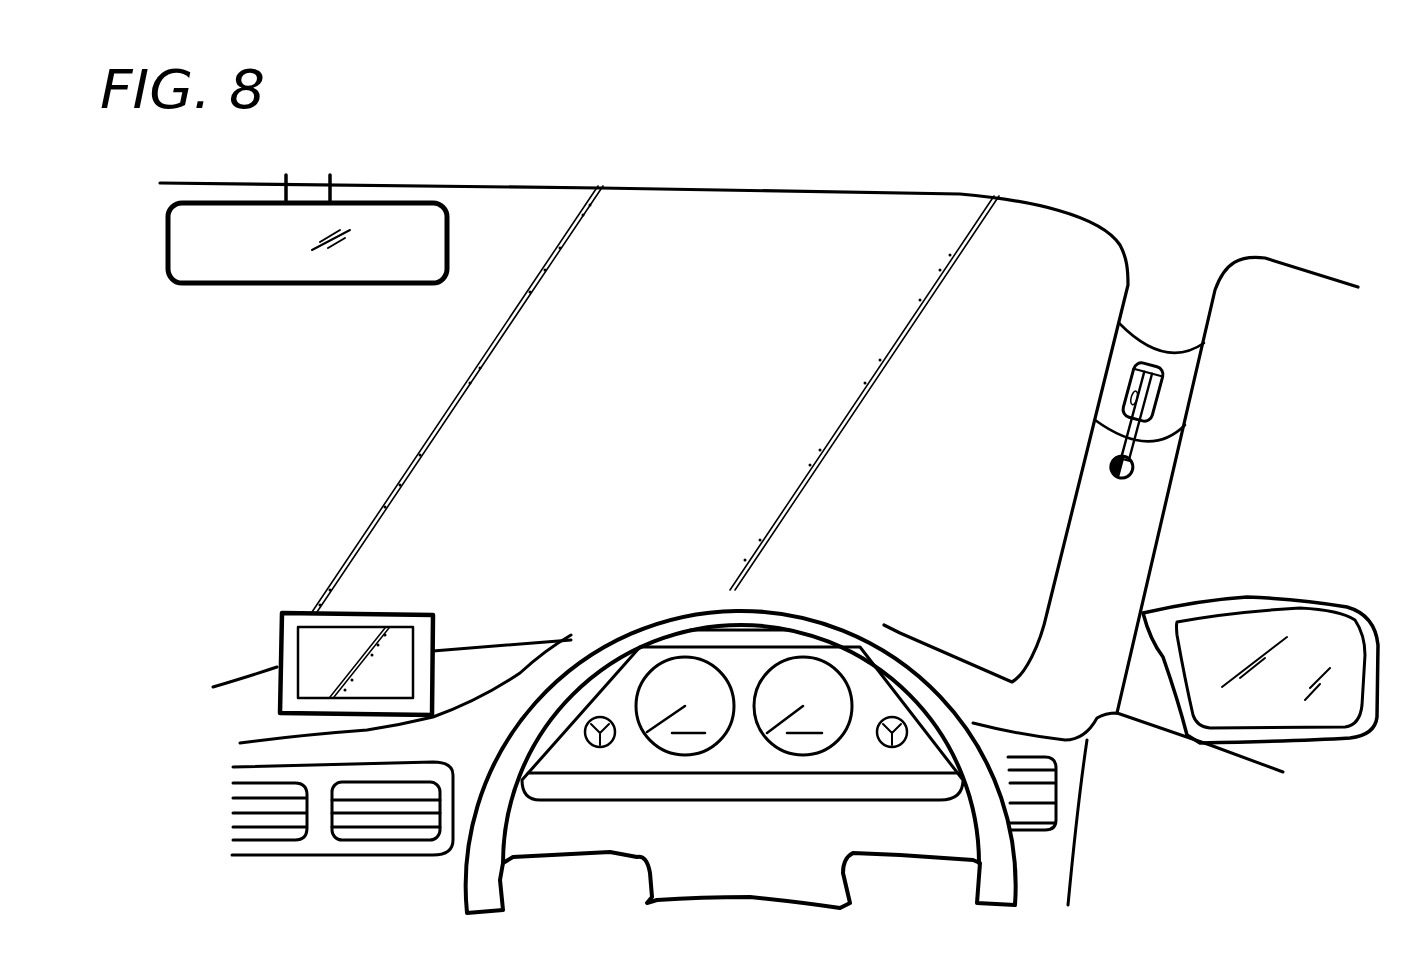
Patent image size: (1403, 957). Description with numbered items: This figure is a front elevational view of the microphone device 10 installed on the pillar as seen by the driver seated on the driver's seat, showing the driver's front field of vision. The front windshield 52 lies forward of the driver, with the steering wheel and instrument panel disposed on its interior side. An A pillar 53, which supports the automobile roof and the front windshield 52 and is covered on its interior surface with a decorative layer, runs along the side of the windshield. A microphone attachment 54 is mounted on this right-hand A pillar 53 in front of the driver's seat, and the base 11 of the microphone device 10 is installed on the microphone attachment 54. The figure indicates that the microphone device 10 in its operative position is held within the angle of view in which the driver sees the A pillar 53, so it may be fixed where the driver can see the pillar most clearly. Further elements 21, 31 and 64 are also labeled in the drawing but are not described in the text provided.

The microphone device 10 is at (1134, 406).
The base 11 is at (1128, 381).
The support arm 21 is at (1120, 438).
The ball joint knob 31 is at (1110, 472).
The front windshield 52 is at (800, 200).
The pillar 53 is at (1143, 521).
The microphone attachment 54 is at (1182, 390).
The display monitor 64 is at (282, 640).